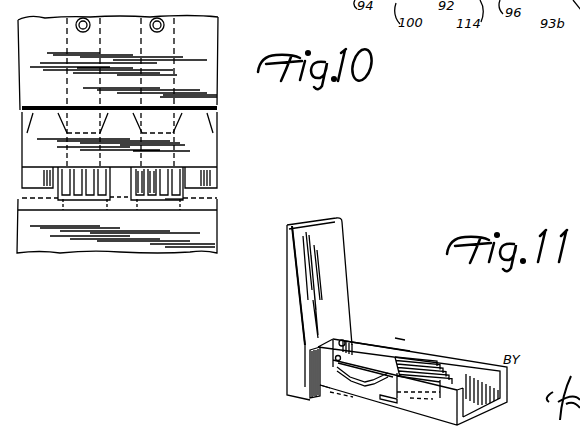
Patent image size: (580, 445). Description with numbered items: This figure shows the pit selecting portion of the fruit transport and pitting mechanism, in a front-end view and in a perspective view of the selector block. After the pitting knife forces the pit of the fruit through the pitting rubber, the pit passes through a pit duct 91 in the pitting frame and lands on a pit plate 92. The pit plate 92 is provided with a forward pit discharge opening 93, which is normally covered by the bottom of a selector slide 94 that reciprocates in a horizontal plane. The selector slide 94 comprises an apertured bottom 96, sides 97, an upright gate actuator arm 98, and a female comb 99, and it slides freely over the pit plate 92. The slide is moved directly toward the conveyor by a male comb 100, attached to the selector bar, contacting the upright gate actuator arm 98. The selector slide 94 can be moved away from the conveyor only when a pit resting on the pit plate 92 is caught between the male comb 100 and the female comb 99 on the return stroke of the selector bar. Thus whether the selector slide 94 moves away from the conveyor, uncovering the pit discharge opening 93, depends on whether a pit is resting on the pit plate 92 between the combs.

In FIG. 10, the pit duct 91 is at (160, 48).
In FIG. 10, the pit plate 92 is at (207, 212).
In FIG. 10, the pit discharge opening 93 is at (170, 213).
In FIG. 11, the selector slide 94 is at (371, 333).
In FIG. 11, the apertured bottom 96 is at (350, 400).
In FIG. 10, the sides 97 is at (181, 193).
In FIG. 11, the sides 97 is at (397, 339).
In FIG. 11, the upright gate actuator arm 98 is at (320, 275).
In FIG. 10, the female comb 99 is at (158, 196).
In FIG. 11, the female comb 99 is at (440, 356).
In FIG. 10, the male comb 100 is at (150, 196).